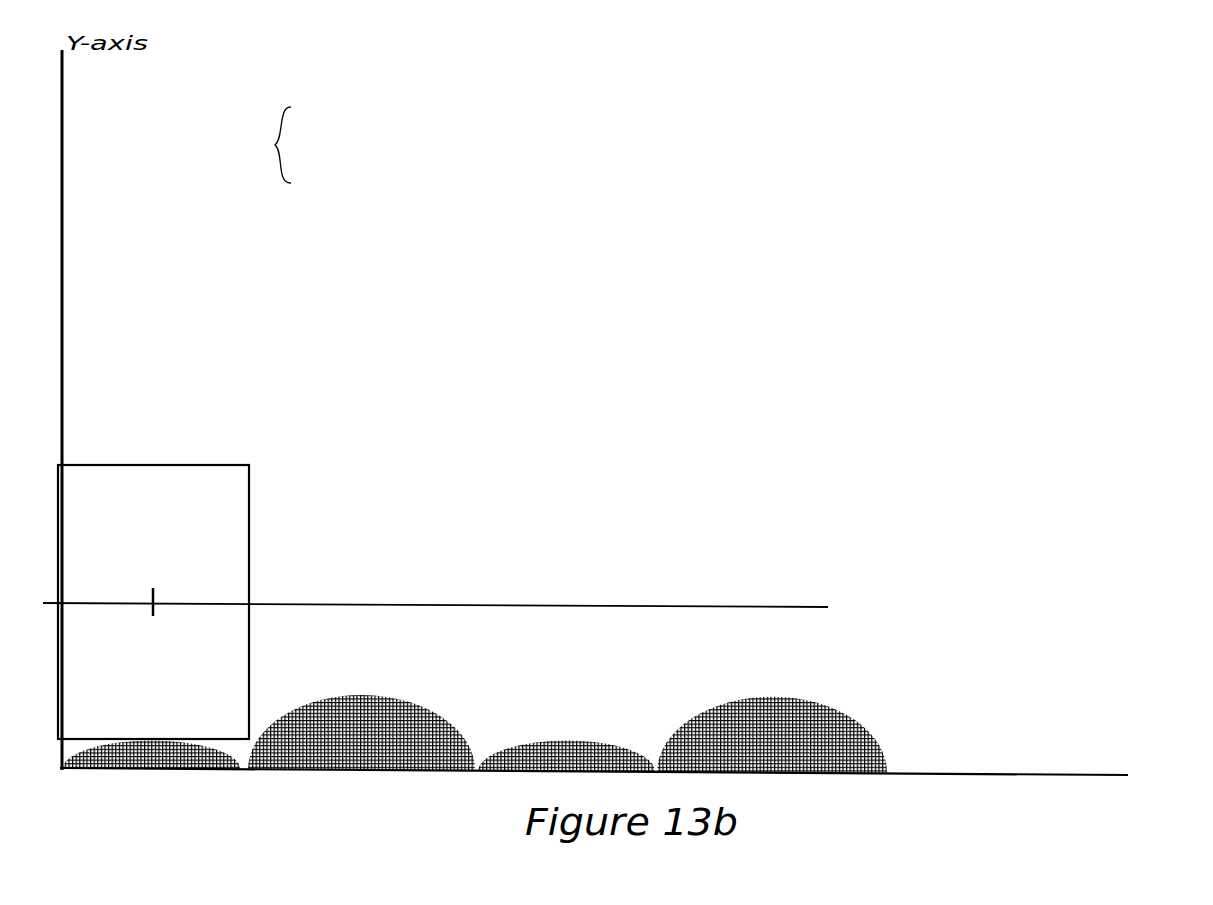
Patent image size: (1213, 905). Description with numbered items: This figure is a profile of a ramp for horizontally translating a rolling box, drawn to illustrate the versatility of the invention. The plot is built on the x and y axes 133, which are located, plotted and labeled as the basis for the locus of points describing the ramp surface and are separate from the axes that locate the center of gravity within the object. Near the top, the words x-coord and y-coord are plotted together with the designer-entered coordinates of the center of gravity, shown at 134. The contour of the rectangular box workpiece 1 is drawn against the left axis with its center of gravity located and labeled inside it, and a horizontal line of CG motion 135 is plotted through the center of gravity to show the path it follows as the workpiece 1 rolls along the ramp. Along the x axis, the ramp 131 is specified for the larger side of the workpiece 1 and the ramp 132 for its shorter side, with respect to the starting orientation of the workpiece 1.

The workpiece 1 is at (249, 543).
The ramp 131 is at (420, 713).
The ramp 132 is at (235, 763).
The x and y axes 133 is at (987, 771).
The center of gravity coordinates 134 is at (457, 147).
The line of CG motion 135 is at (673, 604).